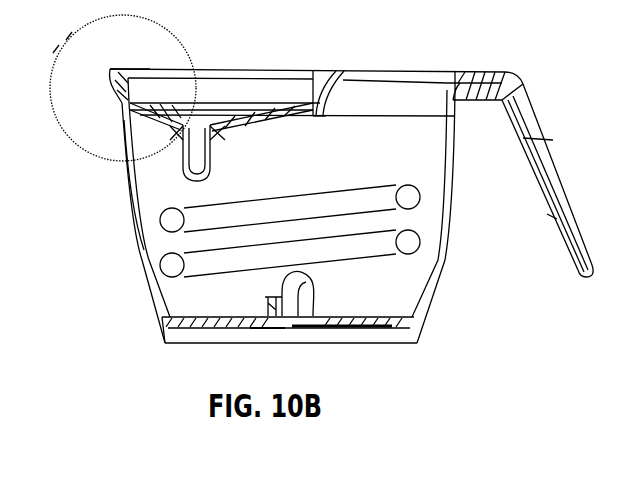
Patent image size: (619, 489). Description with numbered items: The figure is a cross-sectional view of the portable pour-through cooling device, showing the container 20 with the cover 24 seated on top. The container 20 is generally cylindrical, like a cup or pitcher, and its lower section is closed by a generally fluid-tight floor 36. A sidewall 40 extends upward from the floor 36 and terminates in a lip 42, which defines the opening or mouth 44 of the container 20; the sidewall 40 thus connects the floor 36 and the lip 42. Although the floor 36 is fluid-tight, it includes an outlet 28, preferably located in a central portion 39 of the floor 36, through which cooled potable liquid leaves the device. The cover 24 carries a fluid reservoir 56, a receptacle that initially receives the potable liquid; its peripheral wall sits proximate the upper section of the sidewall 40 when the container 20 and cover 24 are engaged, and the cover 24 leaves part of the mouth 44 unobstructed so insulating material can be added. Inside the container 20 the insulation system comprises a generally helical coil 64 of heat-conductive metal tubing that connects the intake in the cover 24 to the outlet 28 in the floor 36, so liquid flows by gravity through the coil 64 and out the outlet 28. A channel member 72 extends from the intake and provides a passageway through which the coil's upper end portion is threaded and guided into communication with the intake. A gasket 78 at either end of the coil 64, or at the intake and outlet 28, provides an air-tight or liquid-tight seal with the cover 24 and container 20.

The container 20 is at (440, 283).
The cover 24 is at (228, 76).
The outlet 28 is at (290, 312).
The floor 36 is at (222, 328).
The central portion 39 is at (275, 334).
The sidewall 40 is at (129, 217).
The lip 42 is at (182, 141).
The mouth 44 is at (201, 59).
The fluid reservoir 56 is at (278, 92).
The coil 64 is at (207, 171).
The channel member 72 is at (327, 328).
The gasket 78 is at (216, 136).